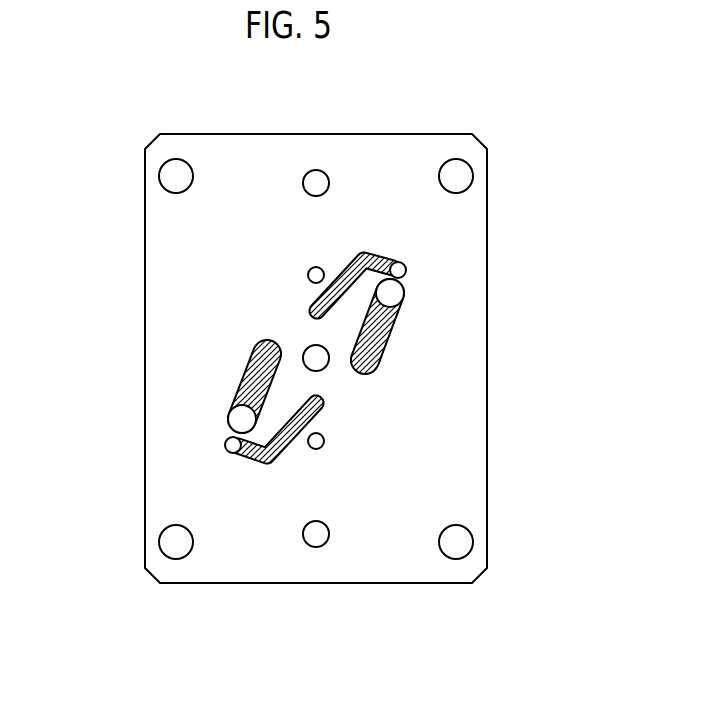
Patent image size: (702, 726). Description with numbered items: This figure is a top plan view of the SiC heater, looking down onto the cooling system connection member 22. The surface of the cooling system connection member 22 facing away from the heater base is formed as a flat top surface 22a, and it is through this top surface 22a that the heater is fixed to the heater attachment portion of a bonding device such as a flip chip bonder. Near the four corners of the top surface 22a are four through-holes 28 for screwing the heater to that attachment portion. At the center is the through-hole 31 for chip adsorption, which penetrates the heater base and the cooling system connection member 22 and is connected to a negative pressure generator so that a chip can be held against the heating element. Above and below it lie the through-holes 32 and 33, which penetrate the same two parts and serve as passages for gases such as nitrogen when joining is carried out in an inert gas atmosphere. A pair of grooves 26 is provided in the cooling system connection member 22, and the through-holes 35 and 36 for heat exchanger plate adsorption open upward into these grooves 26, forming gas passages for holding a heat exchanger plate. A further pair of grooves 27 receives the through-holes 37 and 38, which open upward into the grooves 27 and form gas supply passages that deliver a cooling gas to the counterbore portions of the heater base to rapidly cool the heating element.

The cooling system connection member 22 is at (420, 143).
The top surface 22a is at (240, 177).
The through-holes 28 is at (163, 171).
The grooves 26 is at (310, 306).
The grooves 27 is at (383, 330).
The through-hole for chip adsorption 31 is at (319, 360).
The through-hole for supplying a variety of gases 32 is at (316, 272).
The through-hole for supplying a variety of gases 33 is at (319, 444).
The through-hole for heat exchanger plate adsorption 35 is at (395, 272).
The through-hole for heat exchanger plate adsorption 36 is at (235, 447).
The through-hole 37 is at (386, 290).
The through-hole 38 is at (245, 421).